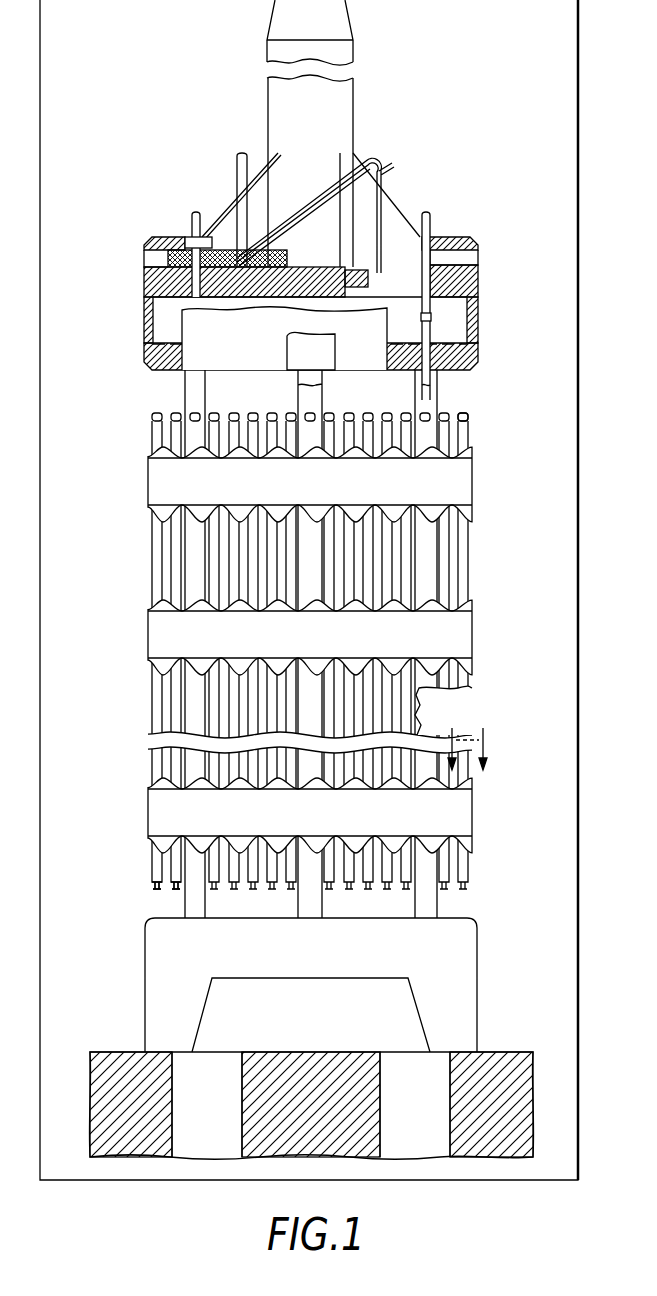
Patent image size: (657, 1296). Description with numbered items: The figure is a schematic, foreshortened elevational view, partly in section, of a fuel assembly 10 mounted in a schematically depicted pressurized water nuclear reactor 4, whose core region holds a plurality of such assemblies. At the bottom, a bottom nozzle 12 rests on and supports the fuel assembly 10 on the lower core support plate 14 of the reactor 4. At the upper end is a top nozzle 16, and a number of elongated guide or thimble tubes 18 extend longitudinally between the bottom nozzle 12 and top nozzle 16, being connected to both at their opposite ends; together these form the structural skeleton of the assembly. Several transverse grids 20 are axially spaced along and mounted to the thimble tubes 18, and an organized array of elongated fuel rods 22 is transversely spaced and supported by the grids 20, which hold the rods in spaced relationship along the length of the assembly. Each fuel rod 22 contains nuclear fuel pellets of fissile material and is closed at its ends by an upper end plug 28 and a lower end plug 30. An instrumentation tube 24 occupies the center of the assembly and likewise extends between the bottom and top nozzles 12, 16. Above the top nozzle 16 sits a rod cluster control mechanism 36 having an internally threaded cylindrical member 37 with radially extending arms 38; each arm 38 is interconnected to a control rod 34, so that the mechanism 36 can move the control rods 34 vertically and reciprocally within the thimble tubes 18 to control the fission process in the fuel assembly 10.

The nuclear reactor 4 is at (592, 565).
The fuel assembly 10 is at (325, 647).
The bottom nozzle 12 is at (480, 942).
The lower core support plate 14 is at (517, 1050).
The top nozzle 16 is at (340, 276).
The thimble tubes 18 is at (440, 381).
The grids 20 is at (331, 500).
The fuel rods 22 is at (152, 760).
The instrumentation tube 24 is at (298, 408).
The upper end plug 28 is at (455, 414).
The lower end plug 30 is at (175, 893).
The control rods 34 is at (455, 328).
The rod cluster control mechanism 36 is at (363, 88).
The internally threaded cylindrical member 37 is at (353, 117).
The radially extending arms 38 is at (226, 205).